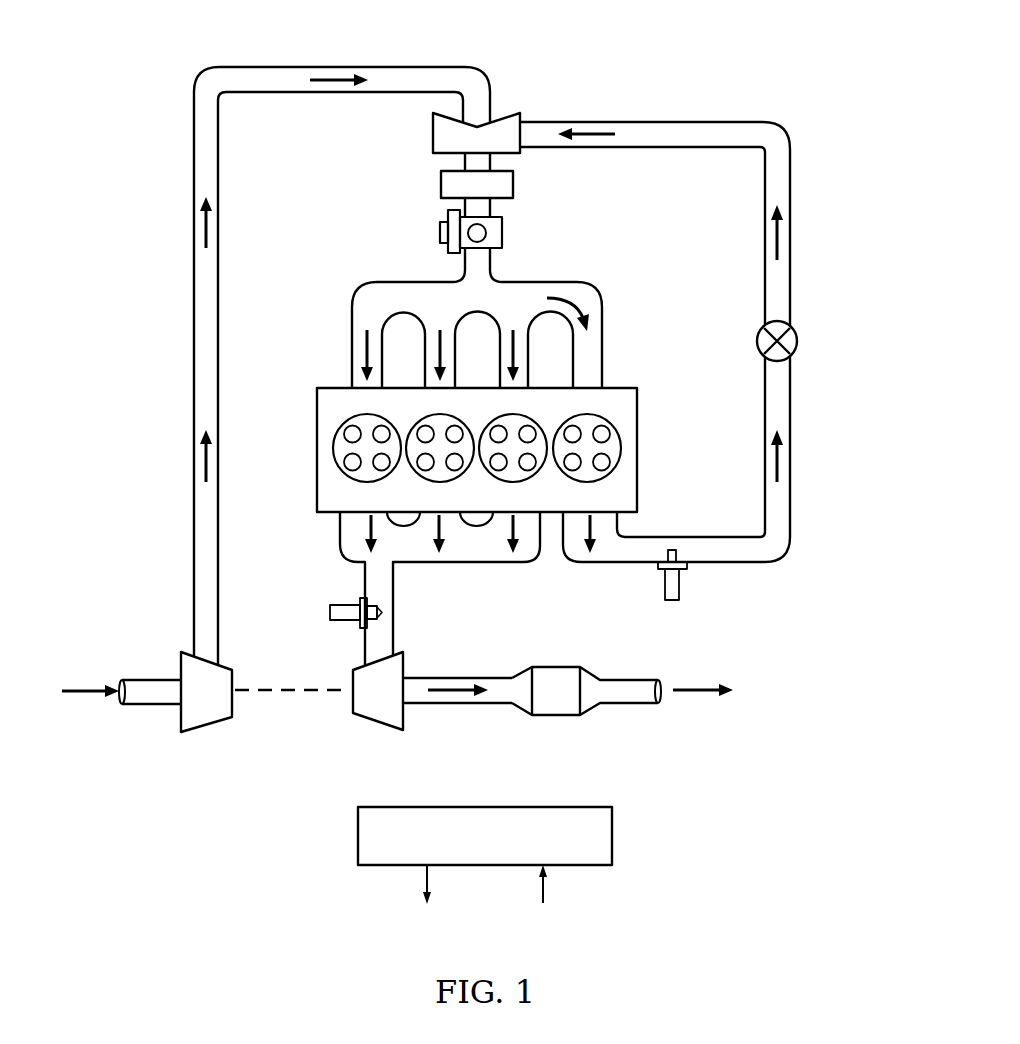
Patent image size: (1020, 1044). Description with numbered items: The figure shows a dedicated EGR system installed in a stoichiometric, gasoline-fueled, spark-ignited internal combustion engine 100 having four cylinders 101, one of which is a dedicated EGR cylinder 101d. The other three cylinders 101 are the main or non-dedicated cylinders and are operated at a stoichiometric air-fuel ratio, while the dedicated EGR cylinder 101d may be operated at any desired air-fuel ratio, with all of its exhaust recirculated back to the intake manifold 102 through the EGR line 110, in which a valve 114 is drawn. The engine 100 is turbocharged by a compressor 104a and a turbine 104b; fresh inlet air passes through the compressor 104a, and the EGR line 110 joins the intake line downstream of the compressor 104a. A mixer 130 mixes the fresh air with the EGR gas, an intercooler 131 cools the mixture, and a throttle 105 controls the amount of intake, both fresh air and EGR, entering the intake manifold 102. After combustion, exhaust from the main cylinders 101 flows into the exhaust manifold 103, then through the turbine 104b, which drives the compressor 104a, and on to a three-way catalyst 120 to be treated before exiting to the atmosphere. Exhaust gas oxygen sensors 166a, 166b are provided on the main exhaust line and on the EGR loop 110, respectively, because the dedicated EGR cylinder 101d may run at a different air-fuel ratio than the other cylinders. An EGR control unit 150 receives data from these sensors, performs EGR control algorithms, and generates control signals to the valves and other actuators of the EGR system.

The internal combustion engine 100 is at (674, 58).
The cylinders 101 is at (615, 399).
The dedicated EGR cylinder 101d is at (620, 463).
The intake manifold 102 is at (392, 282).
The exhaust manifold 103 is at (460, 562).
The compressor 104a is at (207, 723).
The turbine 104b is at (383, 723).
The throttle 105 is at (503, 235).
The EGR line 110 is at (691, 342).
The EGR valve 114 is at (798, 341).
The three-way catalyst 120 is at (556, 716).
The mixer 130 is at (500, 112).
The intercooler 131 is at (438, 183).
The EGR control unit 150 is at (612, 836).
The exhaust gas oxygen sensor 166a is at (330, 610).
The exhaust gas oxygen sensor 166b is at (673, 601).